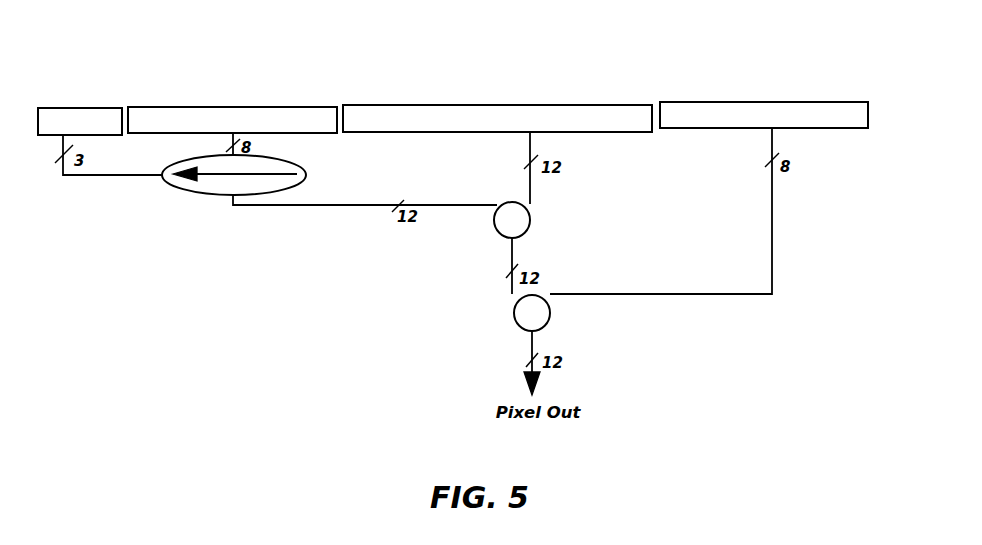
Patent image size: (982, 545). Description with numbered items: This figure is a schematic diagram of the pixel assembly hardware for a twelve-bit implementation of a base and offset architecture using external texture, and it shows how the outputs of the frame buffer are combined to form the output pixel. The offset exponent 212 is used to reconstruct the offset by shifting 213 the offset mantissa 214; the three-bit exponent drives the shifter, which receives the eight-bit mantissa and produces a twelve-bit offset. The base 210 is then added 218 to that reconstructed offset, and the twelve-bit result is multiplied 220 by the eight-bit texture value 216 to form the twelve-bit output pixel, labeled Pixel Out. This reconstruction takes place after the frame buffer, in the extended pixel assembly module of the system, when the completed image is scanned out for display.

The base 210 is at (480, 105).
The offset exponent 212 is at (85, 108).
The shifting 213 is at (307, 175).
The offset mantissa 214 is at (218, 107).
The texture value 216 is at (744, 102).
The adding 218 is at (531, 220).
The multiplying 220 is at (550, 318).